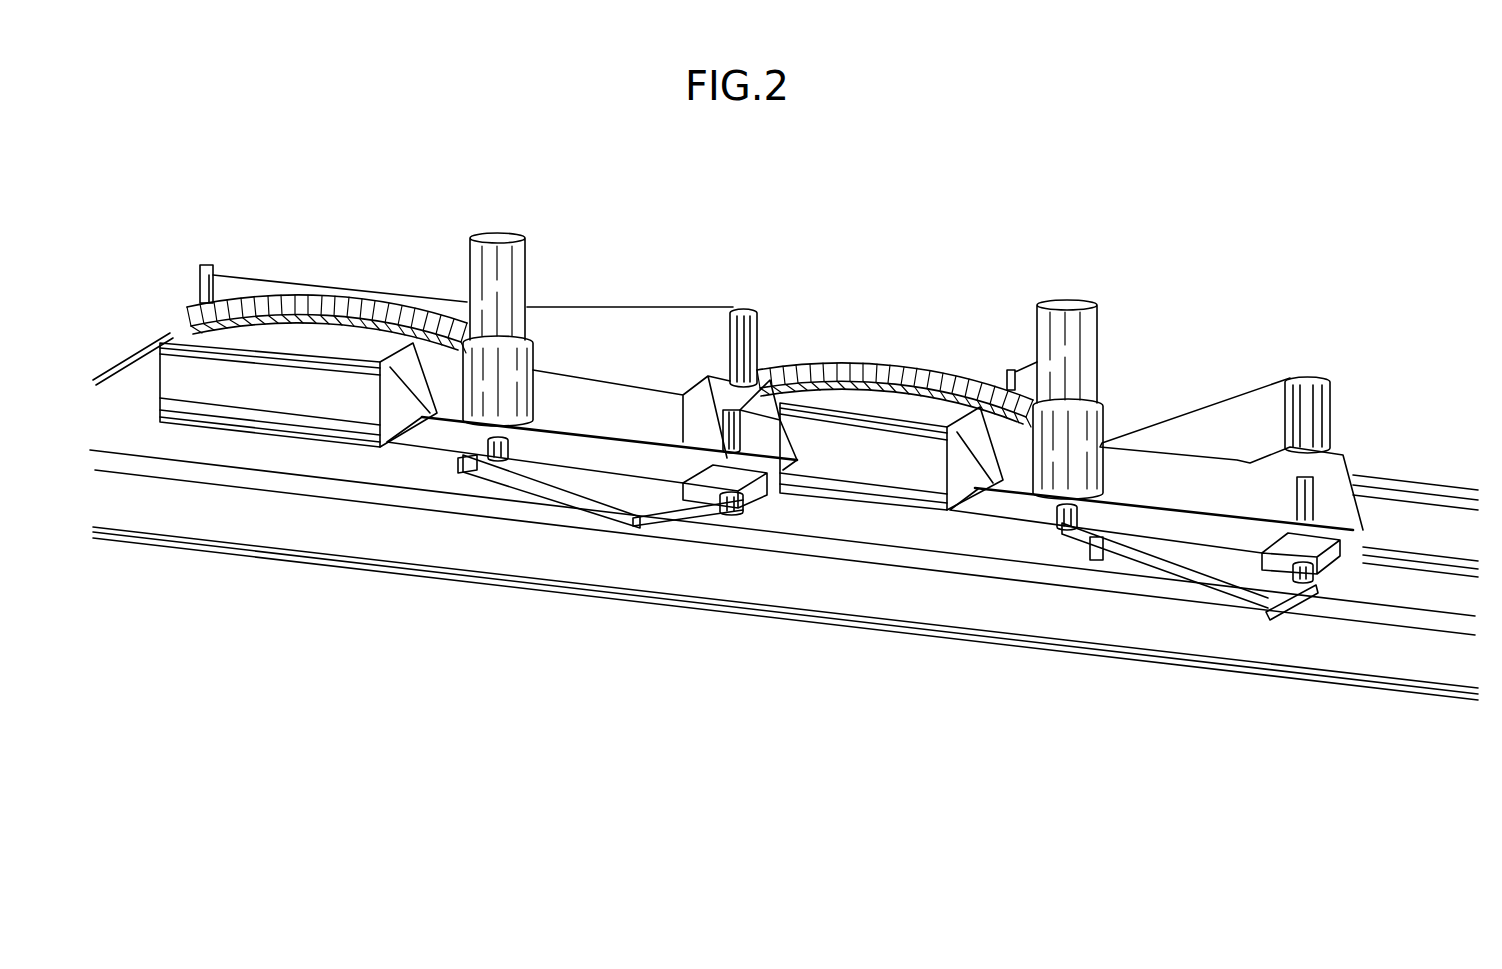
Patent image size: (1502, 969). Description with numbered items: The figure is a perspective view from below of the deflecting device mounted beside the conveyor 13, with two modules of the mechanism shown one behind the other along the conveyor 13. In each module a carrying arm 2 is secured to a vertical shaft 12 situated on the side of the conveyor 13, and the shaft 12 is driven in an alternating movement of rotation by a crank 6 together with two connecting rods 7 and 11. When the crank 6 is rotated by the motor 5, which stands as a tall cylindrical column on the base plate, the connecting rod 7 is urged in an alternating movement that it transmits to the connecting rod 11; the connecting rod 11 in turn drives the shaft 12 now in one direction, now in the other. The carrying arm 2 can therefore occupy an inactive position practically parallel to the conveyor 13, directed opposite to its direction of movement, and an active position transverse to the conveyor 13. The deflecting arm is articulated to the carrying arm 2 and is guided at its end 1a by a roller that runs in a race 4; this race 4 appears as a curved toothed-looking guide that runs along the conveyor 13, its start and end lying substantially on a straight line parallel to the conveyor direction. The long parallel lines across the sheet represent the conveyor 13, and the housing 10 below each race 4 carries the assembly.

The end of deflecting arm 1a is at (1012, 370).
The carrying arm 2 is at (656, 324).
The race 4 is at (385, 313).
The motor 5 is at (500, 244).
The crank 6 is at (500, 460).
The connecting rod 7 is at (585, 495).
The housing box 10 is at (290, 382).
The connecting rod 11 is at (693, 522).
The vertical shaft 12 is at (745, 420).
The conveyor 13 is at (138, 343).